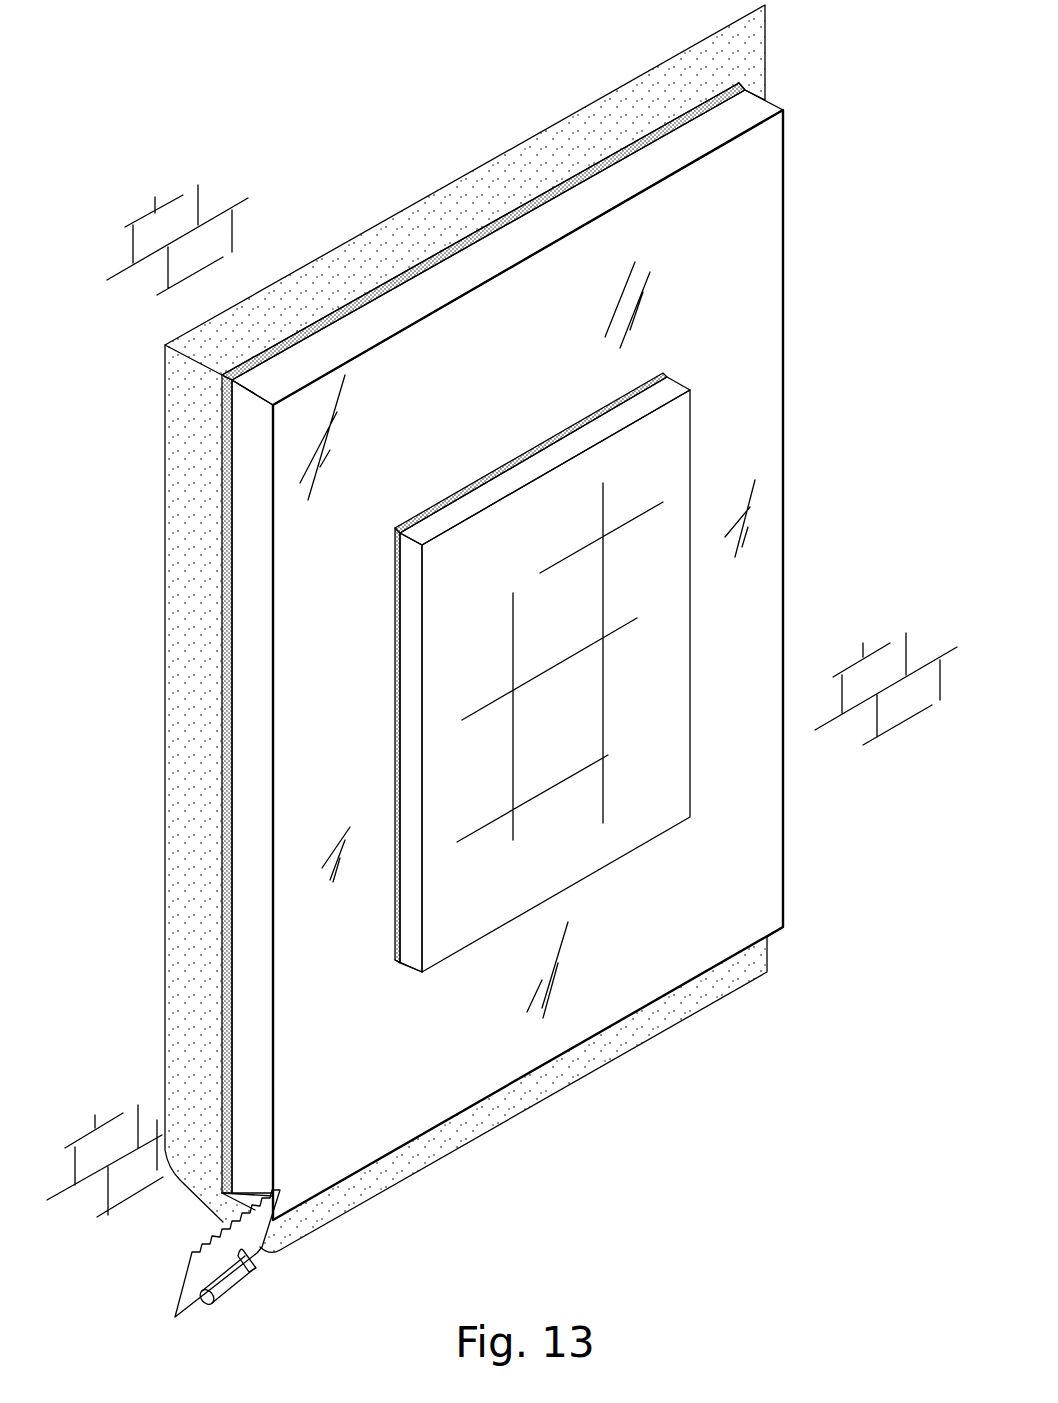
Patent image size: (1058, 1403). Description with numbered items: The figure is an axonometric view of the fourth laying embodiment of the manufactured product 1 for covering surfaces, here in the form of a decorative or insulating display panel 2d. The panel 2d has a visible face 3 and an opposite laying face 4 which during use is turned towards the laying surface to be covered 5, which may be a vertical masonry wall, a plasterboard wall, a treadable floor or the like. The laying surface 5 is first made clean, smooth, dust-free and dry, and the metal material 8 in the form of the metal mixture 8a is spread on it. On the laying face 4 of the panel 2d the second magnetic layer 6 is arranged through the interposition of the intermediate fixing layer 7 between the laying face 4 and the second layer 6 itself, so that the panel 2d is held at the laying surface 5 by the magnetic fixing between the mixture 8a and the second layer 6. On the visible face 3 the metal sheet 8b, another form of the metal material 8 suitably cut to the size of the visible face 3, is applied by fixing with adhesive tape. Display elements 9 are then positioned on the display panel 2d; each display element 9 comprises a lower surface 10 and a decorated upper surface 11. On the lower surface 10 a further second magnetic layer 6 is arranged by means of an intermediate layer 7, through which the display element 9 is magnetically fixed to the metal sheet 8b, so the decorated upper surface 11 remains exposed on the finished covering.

The manufactured product 1 is at (551, 625).
The decorative or insulating panel 2d is at (663, 158).
The visible face 3 is at (707, 152).
The laying face 4 is at (428, 275).
The laying surface to be covered 5 is at (837, 786).
The second layer 6 is at (227, 885).
The intermediate fixing layer 7 is at (397, 588).
The wall opening 8 is at (612, 1086).
The metal mixture 8a is at (705, 987).
The metal sheet 8b is at (745, 297).
The display element 9 is at (413, 725).
The lower surface 10 is at (640, 388).
The decorated upper surface 11 is at (546, 726).